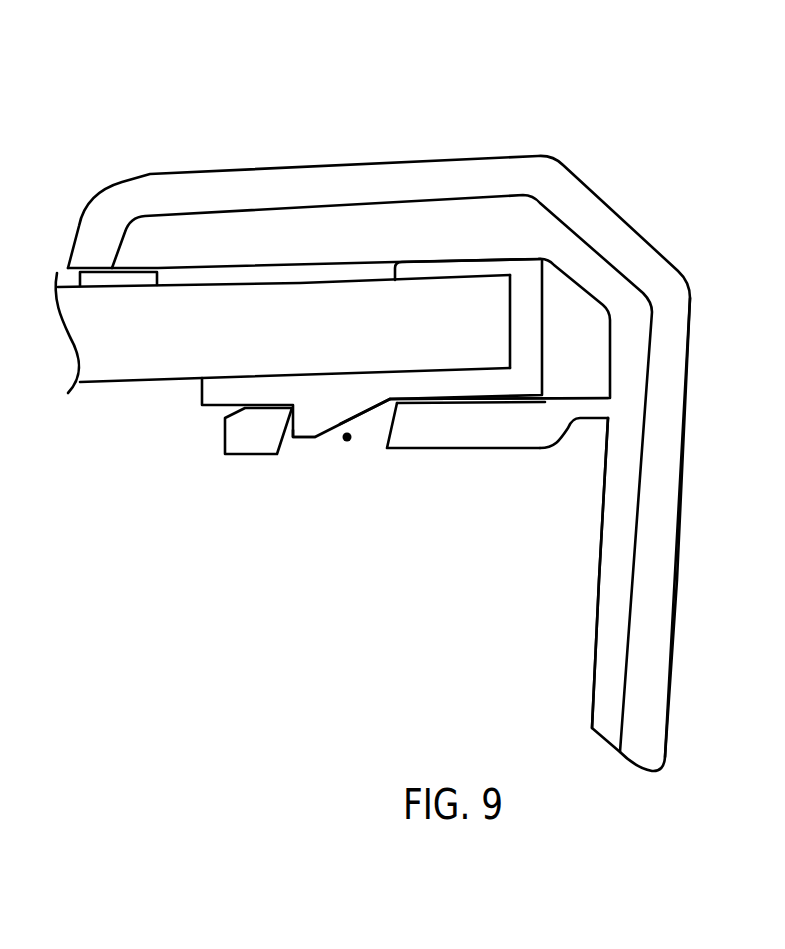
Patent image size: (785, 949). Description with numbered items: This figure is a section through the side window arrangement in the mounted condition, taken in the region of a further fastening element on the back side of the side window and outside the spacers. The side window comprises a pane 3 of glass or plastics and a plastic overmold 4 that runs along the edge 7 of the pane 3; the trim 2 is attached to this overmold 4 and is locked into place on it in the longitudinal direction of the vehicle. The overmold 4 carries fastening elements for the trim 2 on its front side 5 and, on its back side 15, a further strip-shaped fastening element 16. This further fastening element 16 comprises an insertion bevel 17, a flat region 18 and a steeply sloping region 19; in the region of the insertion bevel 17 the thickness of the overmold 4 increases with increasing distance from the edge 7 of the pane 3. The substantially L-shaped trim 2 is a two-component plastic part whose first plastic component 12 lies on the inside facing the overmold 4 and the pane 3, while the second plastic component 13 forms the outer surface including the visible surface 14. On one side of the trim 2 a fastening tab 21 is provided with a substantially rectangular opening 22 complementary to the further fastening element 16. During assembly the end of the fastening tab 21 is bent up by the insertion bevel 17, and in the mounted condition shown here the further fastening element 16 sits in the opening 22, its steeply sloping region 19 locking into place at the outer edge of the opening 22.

The trim 2 is at (138, 76).
The pane 3 is at (85, 337).
The overmold 4 is at (530, 355).
The front side 5 is at (455, 258).
The edge 7 is at (508, 314).
The first plastic component 12 is at (603, 645).
The second plastic component 13 is at (653, 645).
The visible surface 14 is at (282, 166).
The back side 15 is at (485, 398).
The further fastening element 16 is at (325, 418).
The insertion bevel 17 is at (357, 415).
The flat region 18 is at (300, 440).
The steeply sloping region 19 is at (290, 430).
The fastening tab 21 is at (510, 437).
The opening 22 is at (347, 437).